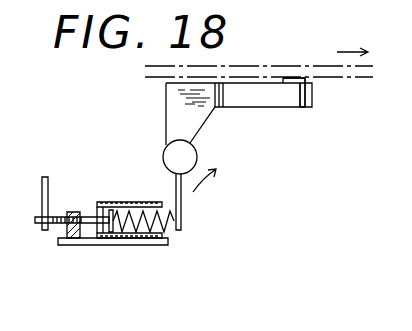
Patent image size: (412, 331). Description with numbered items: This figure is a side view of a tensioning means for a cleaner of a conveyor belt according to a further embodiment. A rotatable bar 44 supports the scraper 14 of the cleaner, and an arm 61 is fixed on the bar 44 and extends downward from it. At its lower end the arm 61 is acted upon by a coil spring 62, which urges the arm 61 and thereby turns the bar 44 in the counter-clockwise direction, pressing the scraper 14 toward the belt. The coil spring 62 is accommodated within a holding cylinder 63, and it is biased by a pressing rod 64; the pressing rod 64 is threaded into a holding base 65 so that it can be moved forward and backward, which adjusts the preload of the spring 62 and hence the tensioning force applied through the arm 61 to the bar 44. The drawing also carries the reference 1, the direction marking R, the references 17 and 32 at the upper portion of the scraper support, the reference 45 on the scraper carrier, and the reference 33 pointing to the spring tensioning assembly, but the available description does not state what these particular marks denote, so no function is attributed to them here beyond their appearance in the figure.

The reference line 1 is at (350, 78).
The direction of movement R is at (363, 52).
The scraper 14 is at (258, 122).
The shaft 17 is at (297, 80).
The rotary member 32 is at (294, 80).
The pin 45 is at (297, 104).
The rotatable bar 44 is at (164, 153).
The arm 61 is at (183, 206).
The urging mechanism 33 is at (109, 135).
The coil spring 62 is at (172, 238).
The holding cylinder 63 is at (120, 202).
The pressing rod 64 is at (57, 226).
The holding base 65 is at (72, 210).